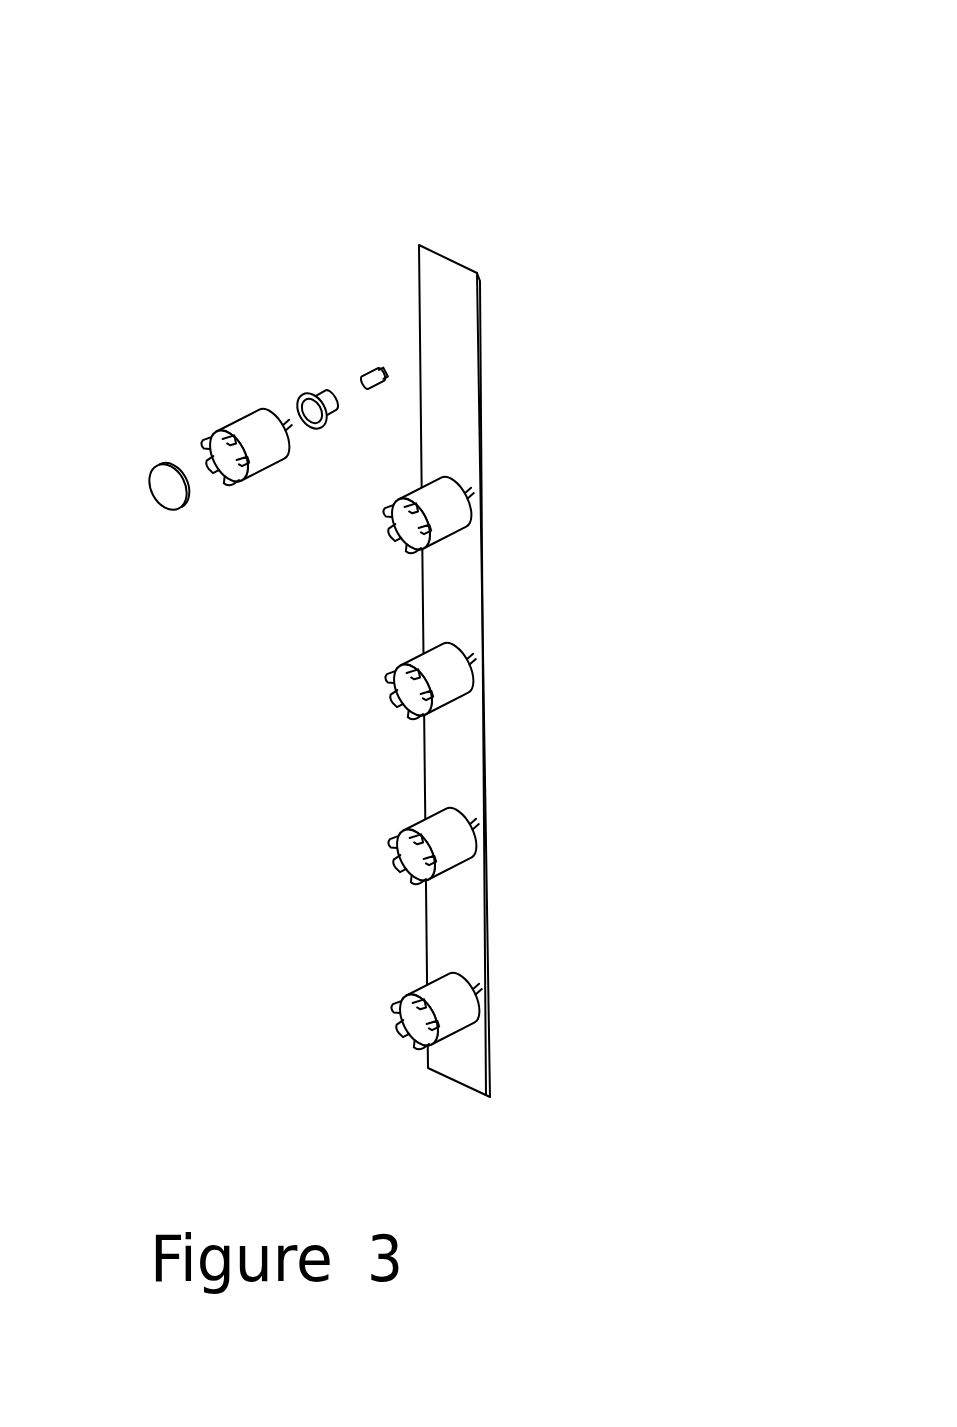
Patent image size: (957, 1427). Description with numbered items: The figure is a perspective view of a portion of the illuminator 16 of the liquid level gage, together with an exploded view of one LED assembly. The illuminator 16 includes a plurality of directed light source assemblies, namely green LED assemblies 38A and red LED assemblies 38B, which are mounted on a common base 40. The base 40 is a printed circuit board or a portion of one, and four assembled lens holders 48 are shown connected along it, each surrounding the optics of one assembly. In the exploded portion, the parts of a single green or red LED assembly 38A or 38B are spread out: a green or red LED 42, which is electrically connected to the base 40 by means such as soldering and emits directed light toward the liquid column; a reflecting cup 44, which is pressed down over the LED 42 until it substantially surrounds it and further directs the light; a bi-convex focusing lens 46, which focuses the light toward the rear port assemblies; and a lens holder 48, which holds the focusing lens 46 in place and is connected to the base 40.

The illuminator 16 is at (470, 163).
The base 40 is at (480, 382).
The green light emitting diode (LED) assembly 38A is at (477, 518).
The red light emitting diode (LED) assembly 38B is at (467, 652).
The lens holder 48 is at (222, 427).
The focusing lens 46 is at (150, 470).
The reflecting cup 44 is at (306, 394).
The LED 42 is at (370, 371).